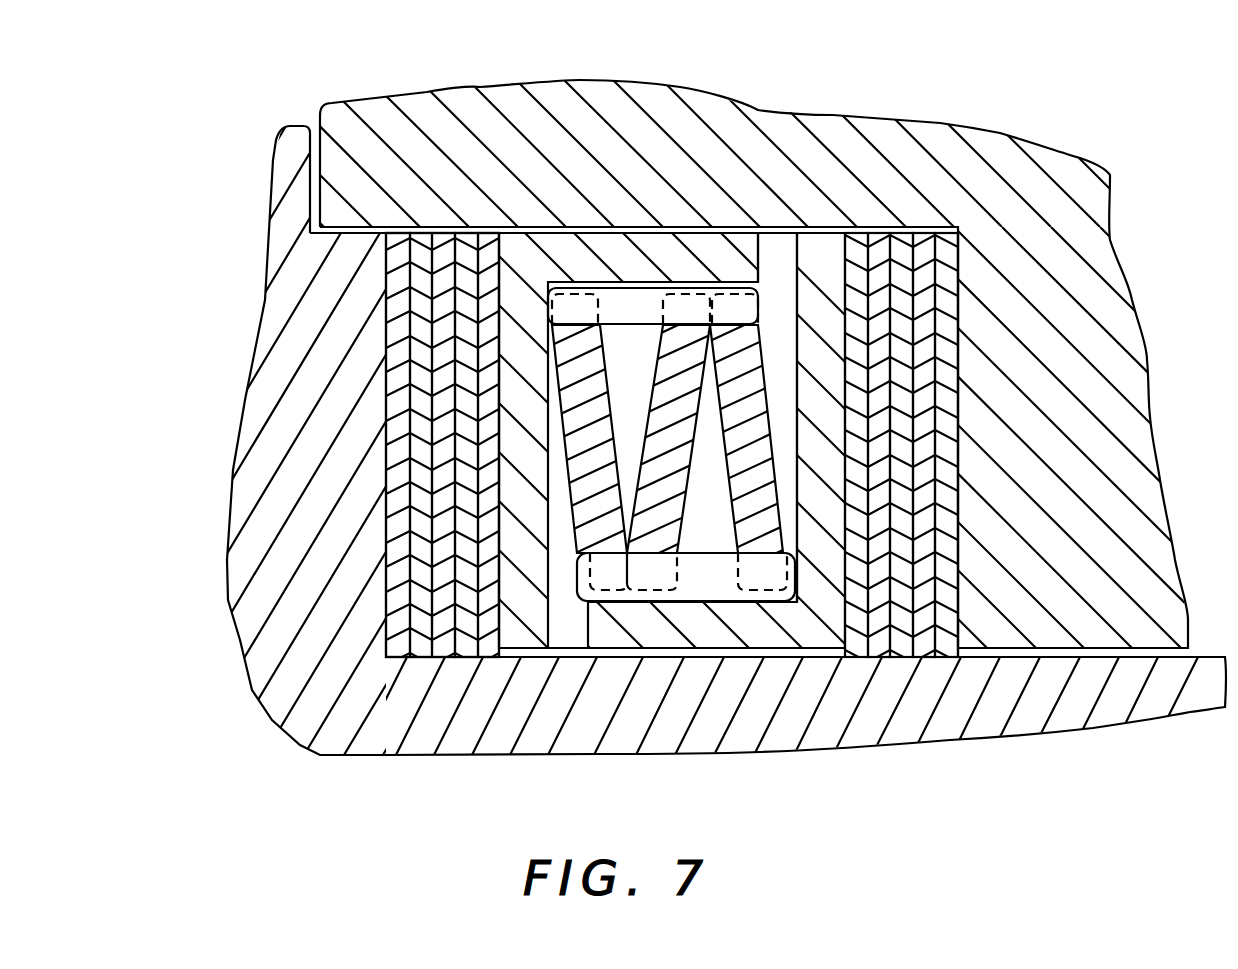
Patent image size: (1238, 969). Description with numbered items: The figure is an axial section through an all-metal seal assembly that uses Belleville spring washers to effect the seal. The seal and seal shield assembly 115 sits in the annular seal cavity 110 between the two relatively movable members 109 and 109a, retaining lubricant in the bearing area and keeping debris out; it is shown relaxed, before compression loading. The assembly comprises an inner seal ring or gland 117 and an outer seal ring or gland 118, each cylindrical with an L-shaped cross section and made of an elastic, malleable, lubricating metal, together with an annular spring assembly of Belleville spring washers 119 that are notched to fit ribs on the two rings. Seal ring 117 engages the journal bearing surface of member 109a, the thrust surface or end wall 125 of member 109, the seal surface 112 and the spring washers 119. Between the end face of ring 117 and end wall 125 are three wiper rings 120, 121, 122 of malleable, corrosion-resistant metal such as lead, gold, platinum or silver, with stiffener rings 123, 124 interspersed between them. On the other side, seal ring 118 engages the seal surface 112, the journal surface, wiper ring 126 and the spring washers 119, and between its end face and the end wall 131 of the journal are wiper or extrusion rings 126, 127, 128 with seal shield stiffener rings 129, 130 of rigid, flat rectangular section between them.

The relatively movable member 109 is at (350, 105).
The journal 109a is at (300, 740).
The annular seal cavity 110 is at (722, 648).
The seal surface 112 is at (784, 246).
The seal and seal shield assembly 115 is at (603, 685).
The inner seal ring or gland 117 is at (808, 630).
The outer seal ring or gland 118 is at (658, 250).
The Belleville spring washers 119 is at (662, 502).
The wiper ring 120 is at (855, 647).
The wiper ring 121 is at (898, 628).
The wiper ring 122 is at (943, 643).
The stiffener ring 123 is at (880, 242).
The stiffener ring 124 is at (928, 242).
The end wall 125 is at (955, 476).
The wiper ring 126 is at (488, 650).
The wiper ring 127 is at (442, 645).
The wiper ring 128 is at (392, 650).
The seal shield stiffener ring 129 is at (468, 242).
The seal shield stiffener ring 130 is at (423, 242).
The end wall 131 is at (386, 436).